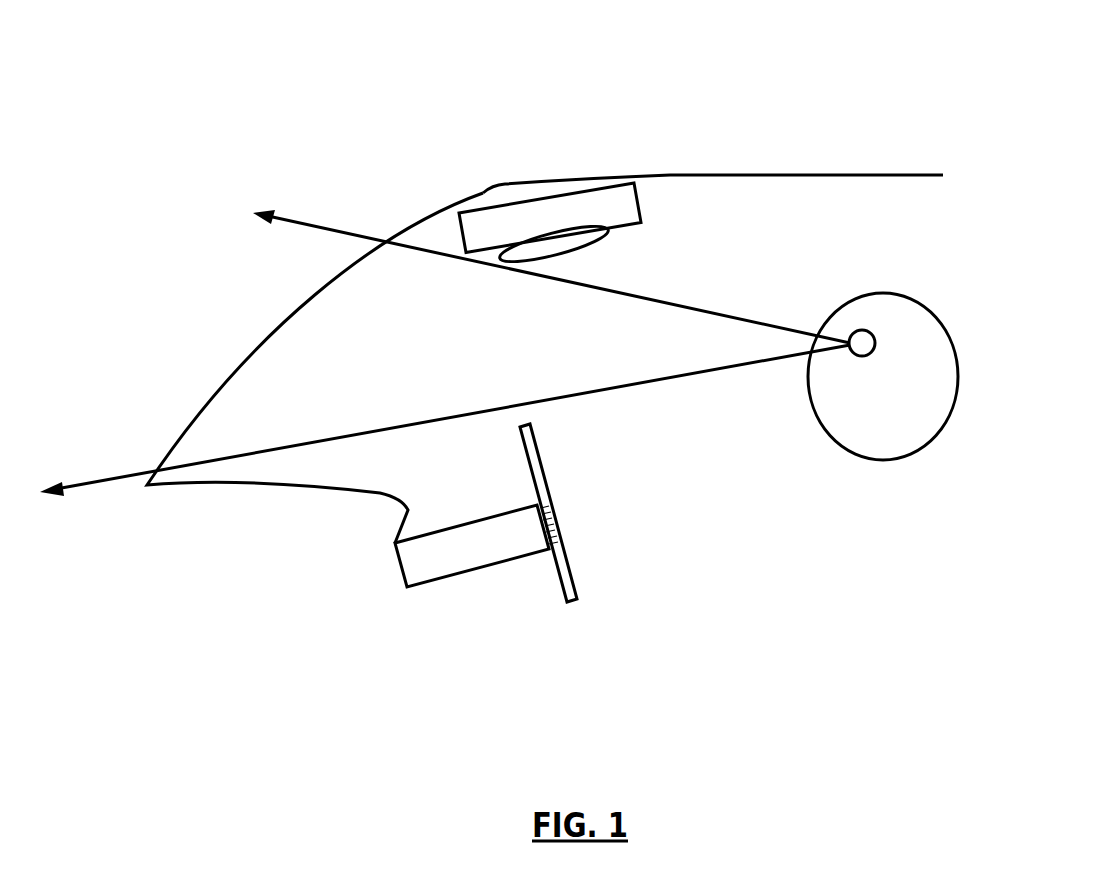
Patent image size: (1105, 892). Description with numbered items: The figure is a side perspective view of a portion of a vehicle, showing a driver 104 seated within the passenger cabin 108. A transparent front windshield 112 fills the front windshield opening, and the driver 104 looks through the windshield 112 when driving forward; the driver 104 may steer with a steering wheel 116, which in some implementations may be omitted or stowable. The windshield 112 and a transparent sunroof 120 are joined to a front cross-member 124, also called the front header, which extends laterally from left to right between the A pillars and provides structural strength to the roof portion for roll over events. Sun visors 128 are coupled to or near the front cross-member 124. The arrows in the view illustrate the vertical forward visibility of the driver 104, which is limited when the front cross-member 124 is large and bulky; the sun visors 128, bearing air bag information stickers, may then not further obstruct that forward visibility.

The driver 104 is at (940, 362).
The passenger cabin 108 is at (712, 232).
The windshield 112 is at (317, 308).
The steering wheel 116 is at (539, 500).
The sunroof 120 is at (682, 173).
The front cross-member 124 is at (535, 210).
The sun visors 128 is at (522, 257).